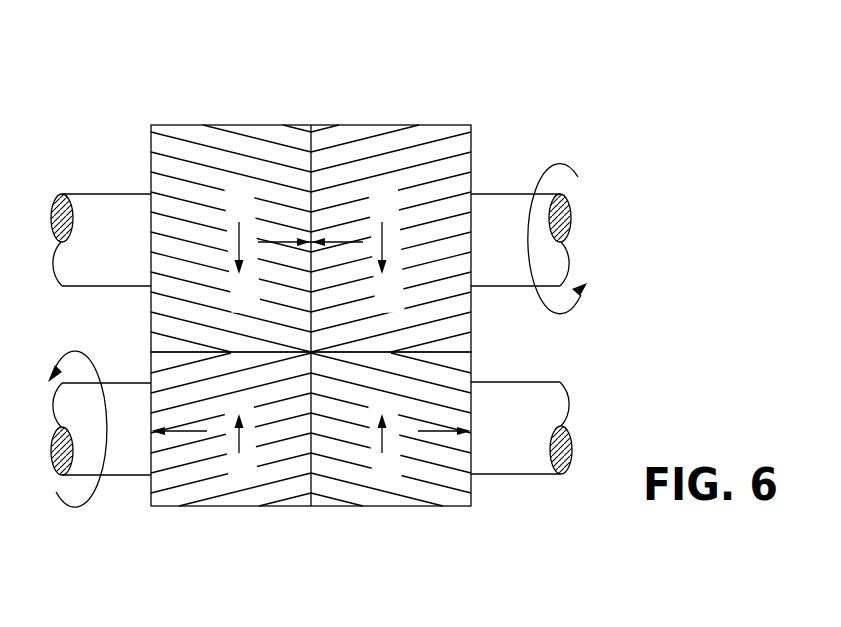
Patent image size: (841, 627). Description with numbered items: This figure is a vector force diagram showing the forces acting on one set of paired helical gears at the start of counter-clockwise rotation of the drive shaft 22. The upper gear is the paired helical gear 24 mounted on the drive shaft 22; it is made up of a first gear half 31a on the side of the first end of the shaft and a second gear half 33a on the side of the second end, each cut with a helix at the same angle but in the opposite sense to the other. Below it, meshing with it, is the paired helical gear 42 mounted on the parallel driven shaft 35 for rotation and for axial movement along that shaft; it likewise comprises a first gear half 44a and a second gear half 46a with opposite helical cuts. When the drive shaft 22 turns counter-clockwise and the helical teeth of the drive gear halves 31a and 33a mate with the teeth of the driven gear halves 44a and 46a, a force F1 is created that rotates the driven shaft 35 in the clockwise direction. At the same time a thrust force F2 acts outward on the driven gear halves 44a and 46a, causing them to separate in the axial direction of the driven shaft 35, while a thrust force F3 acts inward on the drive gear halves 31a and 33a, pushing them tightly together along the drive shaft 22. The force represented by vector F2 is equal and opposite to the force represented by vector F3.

The drive shaft 22 is at (535, 200).
The paired helical gear 24 is at (327, 191).
The first gear half 31a is at (223, 125).
The second gear half 33a is at (427, 125).
The driven shaft 35 is at (512, 474).
The paired helical gear 42 is at (324, 467).
The first gear half 44a is at (227, 507).
The second gear half 46a is at (422, 507).
The force F1 is at (151, 228).
The thrust force F2 is at (190, 432).
The thrust force F3 is at (338, 242).